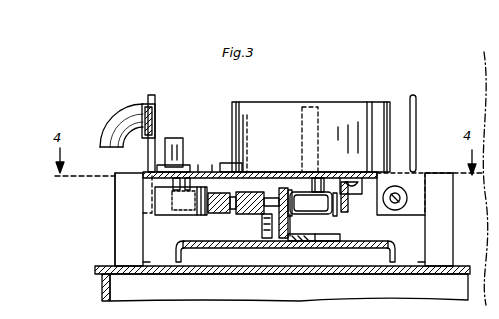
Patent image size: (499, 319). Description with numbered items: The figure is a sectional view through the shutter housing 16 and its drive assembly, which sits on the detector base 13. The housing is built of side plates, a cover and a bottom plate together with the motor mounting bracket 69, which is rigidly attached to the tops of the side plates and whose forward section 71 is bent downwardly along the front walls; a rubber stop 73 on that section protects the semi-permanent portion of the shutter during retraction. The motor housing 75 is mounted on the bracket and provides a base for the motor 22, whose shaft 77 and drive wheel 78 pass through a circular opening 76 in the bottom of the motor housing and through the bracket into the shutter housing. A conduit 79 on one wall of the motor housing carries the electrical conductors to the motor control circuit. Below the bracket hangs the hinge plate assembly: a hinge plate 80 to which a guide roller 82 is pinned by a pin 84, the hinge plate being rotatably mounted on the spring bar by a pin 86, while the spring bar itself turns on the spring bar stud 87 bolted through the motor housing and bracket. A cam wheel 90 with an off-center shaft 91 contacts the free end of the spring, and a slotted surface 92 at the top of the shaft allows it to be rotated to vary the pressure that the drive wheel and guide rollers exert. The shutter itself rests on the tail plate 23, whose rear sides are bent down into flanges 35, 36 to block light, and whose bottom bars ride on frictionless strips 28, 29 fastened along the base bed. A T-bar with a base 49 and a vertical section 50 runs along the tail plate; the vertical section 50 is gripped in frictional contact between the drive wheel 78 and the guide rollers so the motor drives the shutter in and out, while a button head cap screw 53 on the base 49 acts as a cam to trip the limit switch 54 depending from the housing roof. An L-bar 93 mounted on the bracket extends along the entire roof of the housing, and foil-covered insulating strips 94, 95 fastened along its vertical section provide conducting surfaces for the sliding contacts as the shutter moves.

The detector base 13 is at (246, 272).
The shutter housing 16 is at (112, 237).
The motor 22 is at (311, 137).
The tail plate 23 is at (336, 243).
The strip of substantially frictionless material 28 is at (422, 263).
The strip of substantially frictionless material 29 is at (166, 263).
The flange 35 is at (384, 254).
The flange 36 is at (183, 254).
The base of T-bar 49 is at (274, 250).
The vertical section of T-bar 50 is at (290, 231).
The button head cap screw 53 is at (276, 238).
The limit switch 54 is at (240, 229).
The motor mounting bracket 69 is at (112, 206).
The forward section of motor mounting bracket 71 is at (126, 172).
The rubber stop 73 is at (408, 201).
The motor housing 75 is at (417, 108).
The circular opening 76 is at (301, 145).
The shaft 77 is at (322, 182).
The drive wheel 78 is at (310, 203).
The conduit 79 is at (130, 108).
The hinge plate 80 is at (240, 165).
The guide roller 82 is at (236, 212).
The pin 84 is at (256, 191).
The pin 86 is at (213, 171).
The spring bar stud 87 is at (199, 170).
The cam wheel 90 is at (178, 216).
The off-center shaft 91 is at (173, 177).
The slotted surface 92 is at (174, 143).
The L-bar 93 is at (362, 190).
The strip of insulating material with copper foil 94 is at (336, 216).
The strip of insulating material with copper foil 95 is at (352, 209).